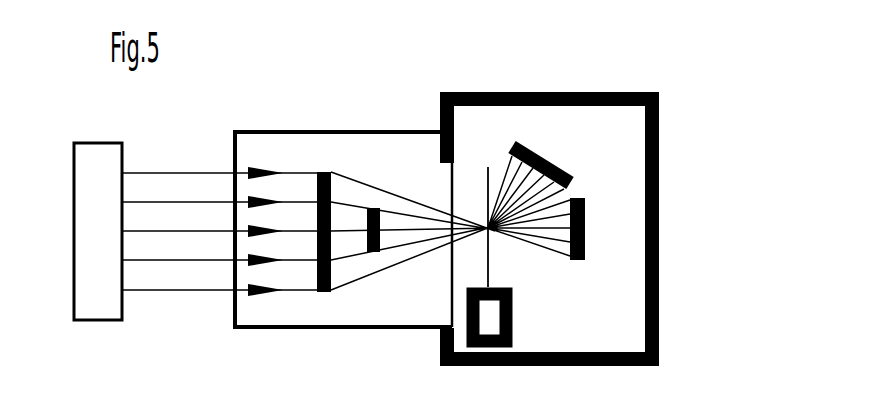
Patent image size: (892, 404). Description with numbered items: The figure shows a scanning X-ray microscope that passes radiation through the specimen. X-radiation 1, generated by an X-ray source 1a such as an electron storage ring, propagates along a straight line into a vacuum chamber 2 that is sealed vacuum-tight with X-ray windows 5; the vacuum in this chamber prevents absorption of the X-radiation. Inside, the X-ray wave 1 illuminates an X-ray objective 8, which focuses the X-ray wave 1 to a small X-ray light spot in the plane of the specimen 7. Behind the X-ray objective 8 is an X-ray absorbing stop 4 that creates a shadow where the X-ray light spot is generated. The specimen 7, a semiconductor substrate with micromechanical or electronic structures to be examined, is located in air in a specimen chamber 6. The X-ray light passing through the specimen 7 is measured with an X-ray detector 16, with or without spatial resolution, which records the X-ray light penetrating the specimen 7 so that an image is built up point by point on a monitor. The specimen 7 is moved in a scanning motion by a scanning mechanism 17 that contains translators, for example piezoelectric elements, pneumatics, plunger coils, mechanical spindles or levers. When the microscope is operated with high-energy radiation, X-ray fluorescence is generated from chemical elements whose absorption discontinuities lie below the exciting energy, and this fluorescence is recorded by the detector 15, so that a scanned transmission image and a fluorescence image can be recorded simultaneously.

The X-radiation 1 is at (205, 180).
The X-ray source 1a is at (98, 149).
The vacuum chamber 2 is at (243, 123).
The X-ray absorbing stop 4 is at (373, 202).
The X-ray windows 5 is at (230, 255).
The specimen chamber 6 is at (452, 90).
The specimen 7 is at (478, 157).
The X-ray objective 8 is at (319, 163).
The detector for X-ray fluorescence 15 is at (522, 130).
The X-ray detector 16 is at (588, 192).
The scanning mechanism 17 is at (517, 295).